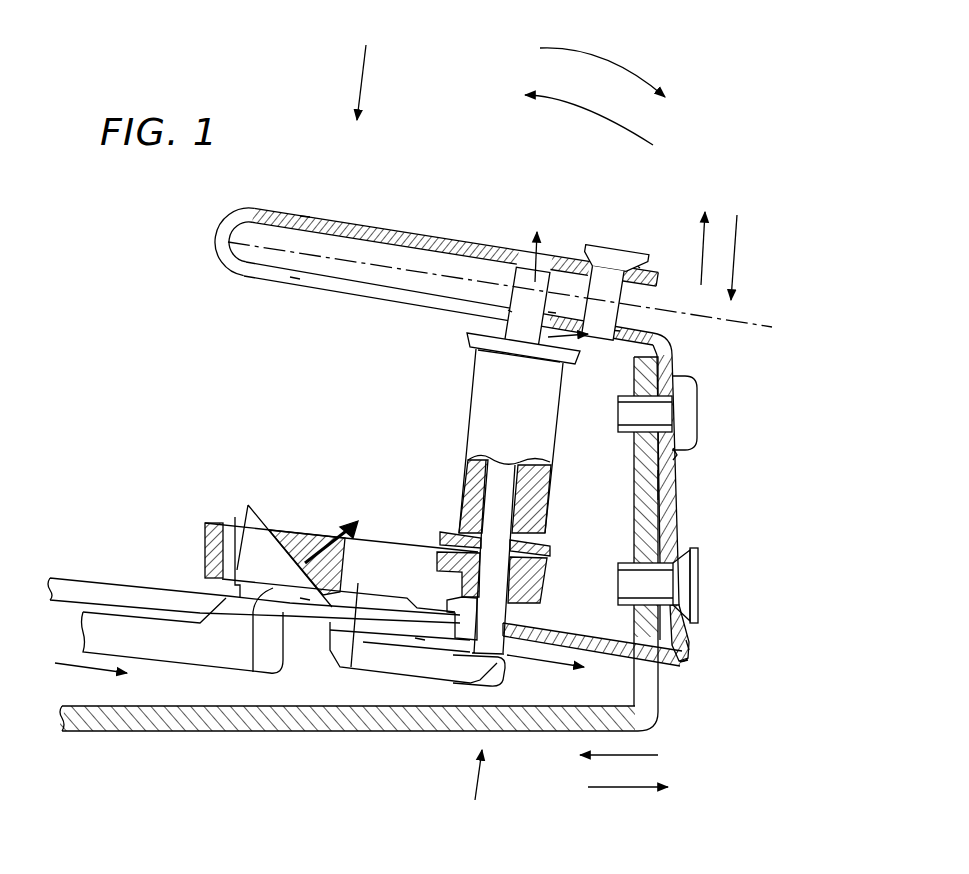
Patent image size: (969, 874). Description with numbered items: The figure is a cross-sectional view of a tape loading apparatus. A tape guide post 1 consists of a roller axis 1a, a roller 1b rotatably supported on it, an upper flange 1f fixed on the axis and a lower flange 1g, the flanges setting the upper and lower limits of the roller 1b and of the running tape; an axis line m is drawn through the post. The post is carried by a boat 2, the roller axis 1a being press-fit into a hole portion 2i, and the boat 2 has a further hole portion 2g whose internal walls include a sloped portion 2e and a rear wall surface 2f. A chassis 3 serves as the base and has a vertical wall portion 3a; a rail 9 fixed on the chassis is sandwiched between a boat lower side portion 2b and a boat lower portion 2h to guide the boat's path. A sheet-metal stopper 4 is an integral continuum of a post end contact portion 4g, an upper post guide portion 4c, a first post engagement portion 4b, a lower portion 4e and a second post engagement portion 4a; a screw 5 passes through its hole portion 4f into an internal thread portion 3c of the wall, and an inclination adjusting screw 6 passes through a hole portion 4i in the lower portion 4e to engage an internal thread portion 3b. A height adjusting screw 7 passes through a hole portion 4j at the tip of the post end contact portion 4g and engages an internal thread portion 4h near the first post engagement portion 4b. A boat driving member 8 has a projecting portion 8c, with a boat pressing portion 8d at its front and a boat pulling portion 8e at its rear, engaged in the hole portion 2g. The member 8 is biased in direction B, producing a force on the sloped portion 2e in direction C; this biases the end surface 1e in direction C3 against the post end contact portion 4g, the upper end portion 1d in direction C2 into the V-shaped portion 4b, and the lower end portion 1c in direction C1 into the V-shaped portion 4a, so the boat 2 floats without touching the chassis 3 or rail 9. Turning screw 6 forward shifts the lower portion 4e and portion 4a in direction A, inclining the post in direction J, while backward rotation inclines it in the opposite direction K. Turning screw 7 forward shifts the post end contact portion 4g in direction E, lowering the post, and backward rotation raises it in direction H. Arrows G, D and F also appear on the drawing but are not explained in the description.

The tape guide post 1 is at (488, 390).
The roller axis 1a is at (497, 497).
The roller 1b is at (540, 421).
The lower end portion 1c is at (450, 660).
The upper end portion 1d is at (512, 312).
The end surface 1e is at (507, 245).
The upper flange 1f is at (467, 338).
The lower flange 1g is at (444, 535).
The boat 2 is at (340, 622).
The boat lower side portion 2b is at (423, 618).
The sloped portion 2e is at (306, 600).
The rear wall surface 2f is at (205, 557).
The hole portion 2g is at (235, 530).
The boat lower portion 2h is at (363, 657).
The hole portion 2i is at (457, 586).
The chassis 3 is at (125, 722).
The vertical wall portion 3a is at (647, 490).
The internal thread portion 3b is at (688, 660).
The internal thread portion 3c is at (673, 488).
The stopper 4 is at (673, 357).
The second post engagement portion 4a is at (518, 625).
The first post engagement portion 4b is at (551, 312).
The upper post guide portion 4c is at (297, 284).
The lower portion 4e is at (685, 664).
The hole portion 4f is at (675, 453).
The post end contact portion 4g is at (372, 229).
The internal thread portion 4h is at (616, 331).
The hole portion 4i is at (690, 637).
The hole portion 4j is at (637, 268).
The screw 5 is at (698, 413).
The inclination adjusting screw 6 is at (700, 583).
The height adjusting screw 7 is at (607, 247).
The boat driving member 8 is at (177, 650).
The projecting portion 8c is at (273, 545).
The boat pressing portion 8d is at (253, 672).
The boat pulling portion 8e is at (239, 527).
The rail 9 is at (85, 587).
The axis m is at (214, 240).
The direction G is at (369, 66).
The arrow J is at (594, 64).
The arrow K is at (601, 130).
The arrow E is at (725, 236).
The arrow H is at (697, 293).
The arrow C is at (331, 530).
The arrow C1 is at (554, 679).
The arrow C2 is at (582, 354).
The arrow C3 is at (519, 244).
The arrow B is at (78, 667).
The arrow A is at (633, 754).
The direction D is at (619, 788).
The direction F is at (471, 802).